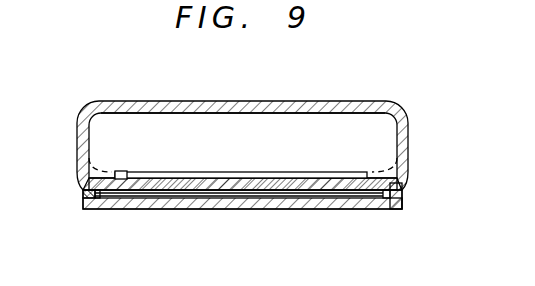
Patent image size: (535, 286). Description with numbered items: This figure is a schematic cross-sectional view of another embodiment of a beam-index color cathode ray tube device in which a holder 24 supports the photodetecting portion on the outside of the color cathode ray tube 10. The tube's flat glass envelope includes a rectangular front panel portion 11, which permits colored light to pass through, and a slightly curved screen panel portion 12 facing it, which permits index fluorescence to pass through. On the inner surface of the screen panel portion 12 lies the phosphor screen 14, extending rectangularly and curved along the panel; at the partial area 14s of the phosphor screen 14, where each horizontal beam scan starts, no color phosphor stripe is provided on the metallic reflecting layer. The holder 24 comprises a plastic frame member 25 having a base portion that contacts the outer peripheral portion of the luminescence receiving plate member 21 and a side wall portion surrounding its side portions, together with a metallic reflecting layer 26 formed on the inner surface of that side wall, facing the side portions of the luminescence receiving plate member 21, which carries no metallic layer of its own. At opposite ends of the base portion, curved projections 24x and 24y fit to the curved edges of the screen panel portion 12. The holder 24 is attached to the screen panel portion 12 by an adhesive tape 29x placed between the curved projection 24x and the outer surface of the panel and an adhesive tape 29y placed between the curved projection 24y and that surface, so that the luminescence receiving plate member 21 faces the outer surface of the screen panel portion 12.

The color cathode ray tube 10 is at (373, 98).
The front panel portion 11 is at (235, 100).
The screen panel portion 12 is at (274, 182).
The phosphor screen 14 is at (281, 100).
The partial area of the phosphor screen 14s is at (121, 170).
The luminescence receiving plate member 21 is at (195, 205).
The holder 24 is at (405, 213).
The curved projection 24x is at (84, 194).
The curved projection 24y is at (404, 200).
The frame member 25 is at (88, 197).
The metallic reflecting layer 26 is at (97, 199).
The adhesive tape 29x is at (84, 186).
The adhesive tape 29y is at (402, 188).